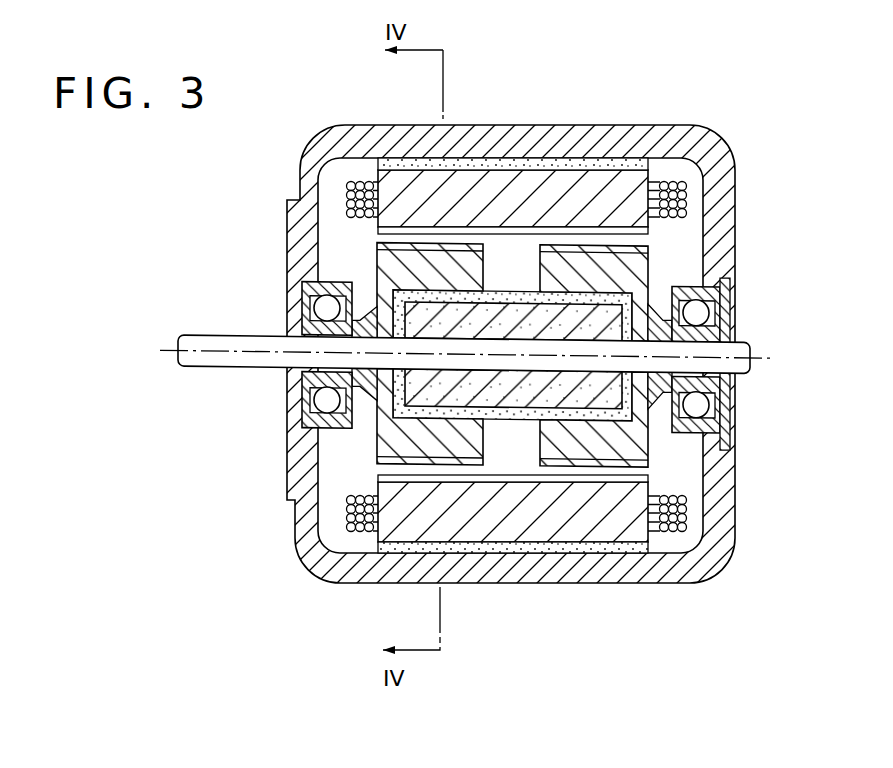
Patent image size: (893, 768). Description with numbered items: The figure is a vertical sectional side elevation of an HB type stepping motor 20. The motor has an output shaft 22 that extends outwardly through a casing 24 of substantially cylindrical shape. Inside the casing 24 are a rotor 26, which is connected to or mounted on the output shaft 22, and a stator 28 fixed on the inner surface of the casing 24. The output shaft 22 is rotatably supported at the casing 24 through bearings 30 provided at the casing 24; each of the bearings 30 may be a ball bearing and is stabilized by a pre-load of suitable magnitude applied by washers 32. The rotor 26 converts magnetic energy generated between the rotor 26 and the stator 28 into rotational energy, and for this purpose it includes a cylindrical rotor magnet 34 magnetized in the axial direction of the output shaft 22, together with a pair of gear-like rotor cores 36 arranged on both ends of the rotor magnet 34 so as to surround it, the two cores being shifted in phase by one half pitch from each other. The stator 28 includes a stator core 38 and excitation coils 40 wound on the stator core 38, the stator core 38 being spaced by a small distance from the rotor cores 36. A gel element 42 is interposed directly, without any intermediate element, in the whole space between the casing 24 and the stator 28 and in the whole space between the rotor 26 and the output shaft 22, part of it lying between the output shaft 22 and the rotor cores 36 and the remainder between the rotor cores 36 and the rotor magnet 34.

The HB stepping motor 20 is at (670, 88).
The output shaft 22 is at (241, 362).
The casing 24 is at (497, 127).
The rotor 26 is at (511, 365).
The stator 28 is at (497, 213).
The bearings 30 is at (318, 306).
The washers 32 is at (364, 402).
The rotor magnet 34 is at (494, 333).
The rotor cores 36 is at (576, 284).
The stator core 38 is at (420, 172).
The excitation coils 40 is at (347, 188).
The gel element 42 is at (596, 162).